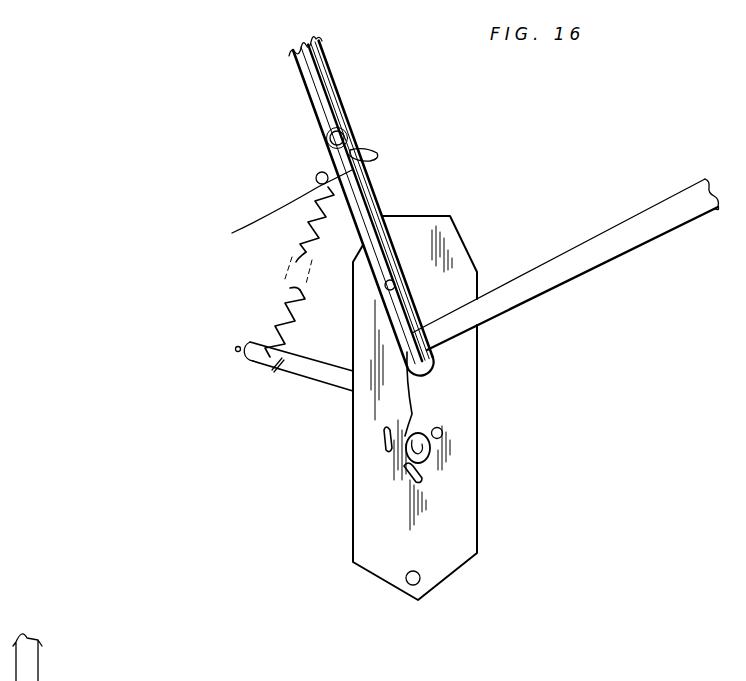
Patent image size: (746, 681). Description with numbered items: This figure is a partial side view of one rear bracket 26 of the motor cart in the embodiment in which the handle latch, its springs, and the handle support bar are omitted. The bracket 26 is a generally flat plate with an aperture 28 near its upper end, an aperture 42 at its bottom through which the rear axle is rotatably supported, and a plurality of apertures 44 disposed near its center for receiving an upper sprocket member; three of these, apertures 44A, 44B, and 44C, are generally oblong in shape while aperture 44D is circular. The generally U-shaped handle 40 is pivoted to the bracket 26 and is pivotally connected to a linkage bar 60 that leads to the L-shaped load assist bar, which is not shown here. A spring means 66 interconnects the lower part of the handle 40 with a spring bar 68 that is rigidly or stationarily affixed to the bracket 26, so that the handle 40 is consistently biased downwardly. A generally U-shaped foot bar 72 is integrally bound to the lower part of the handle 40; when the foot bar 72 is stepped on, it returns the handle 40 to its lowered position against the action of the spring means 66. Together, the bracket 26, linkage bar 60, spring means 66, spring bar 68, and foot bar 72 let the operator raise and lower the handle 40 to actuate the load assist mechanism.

The rear bracket 26 is at (497, 445).
The aperture 28 is at (396, 282).
The handle 40 is at (195, 415).
The aperture 42 is at (414, 586).
The plurality of apertures 44 is at (393, 417).
The aperture 44A is at (413, 334).
The aperture 44B is at (421, 481).
The aperture 44C is at (381, 450).
The aperture 44D is at (441, 429).
The linkage bar 60 is at (345, 132).
The spring means 66 is at (298, 228).
The spring bar 68 is at (256, 362).
The foot bar 72 is at (573, 265).